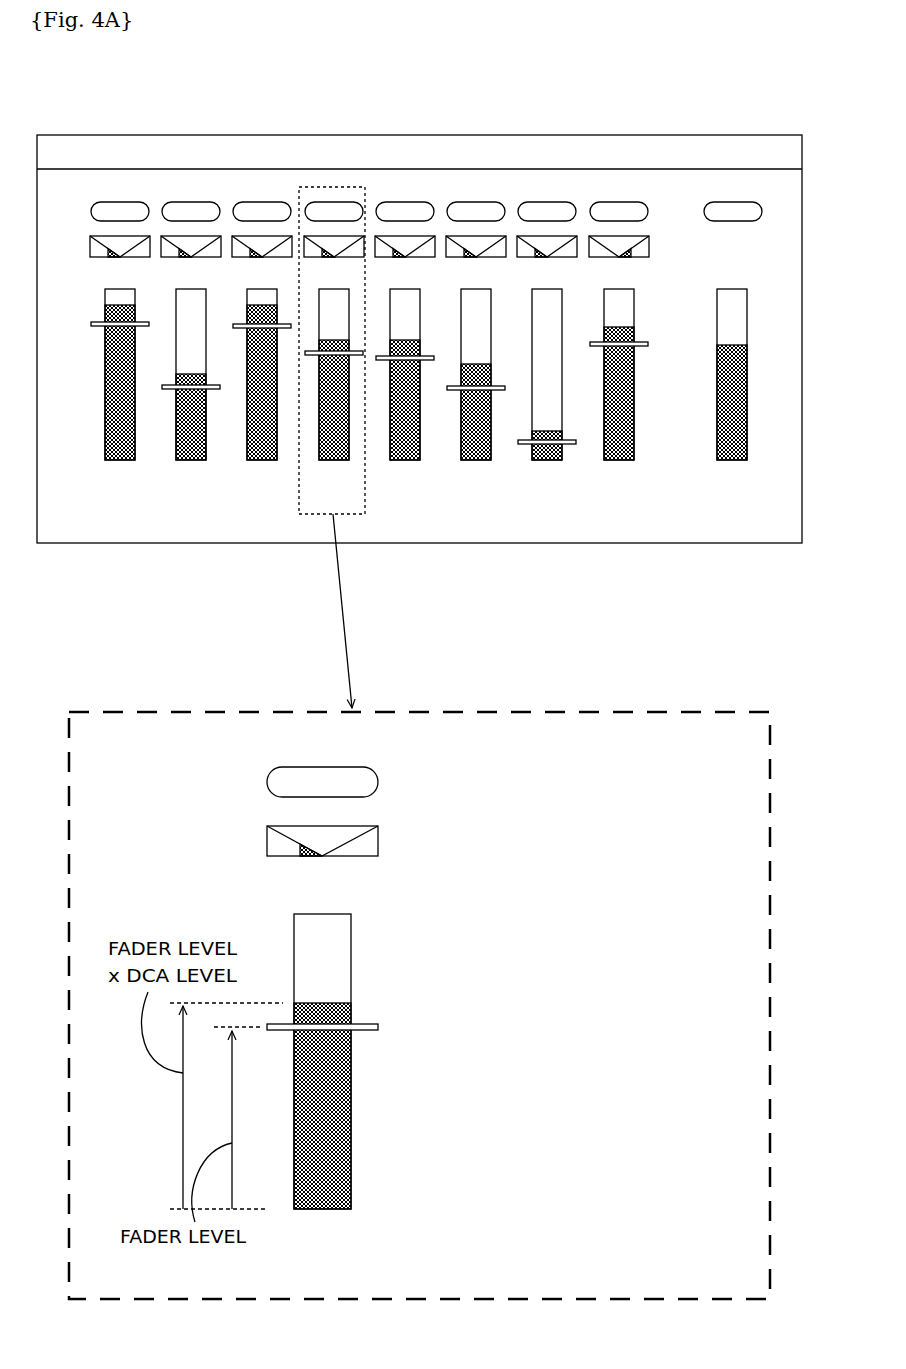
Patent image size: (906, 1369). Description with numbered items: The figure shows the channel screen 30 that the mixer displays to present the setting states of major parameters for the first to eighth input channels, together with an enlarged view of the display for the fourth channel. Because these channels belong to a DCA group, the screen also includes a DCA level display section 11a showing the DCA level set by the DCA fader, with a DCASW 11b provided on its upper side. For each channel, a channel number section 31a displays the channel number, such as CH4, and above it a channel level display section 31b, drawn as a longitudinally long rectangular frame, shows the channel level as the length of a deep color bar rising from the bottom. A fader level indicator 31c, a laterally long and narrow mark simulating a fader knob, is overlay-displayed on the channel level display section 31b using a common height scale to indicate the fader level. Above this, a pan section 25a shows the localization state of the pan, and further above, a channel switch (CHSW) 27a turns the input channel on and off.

The channel switch (CHSW) 27a is at (118, 196).
The pan section 25a is at (148, 234).
The channel screen 30 is at (419, 421).
The DCASW 11b is at (702, 200).
The DCA level display section 11a is at (712, 463).
The fader level indicator 31c is at (366, 1022).
The channel level display section 31b is at (357, 1103).
The channel number section 31a is at (363, 1240).